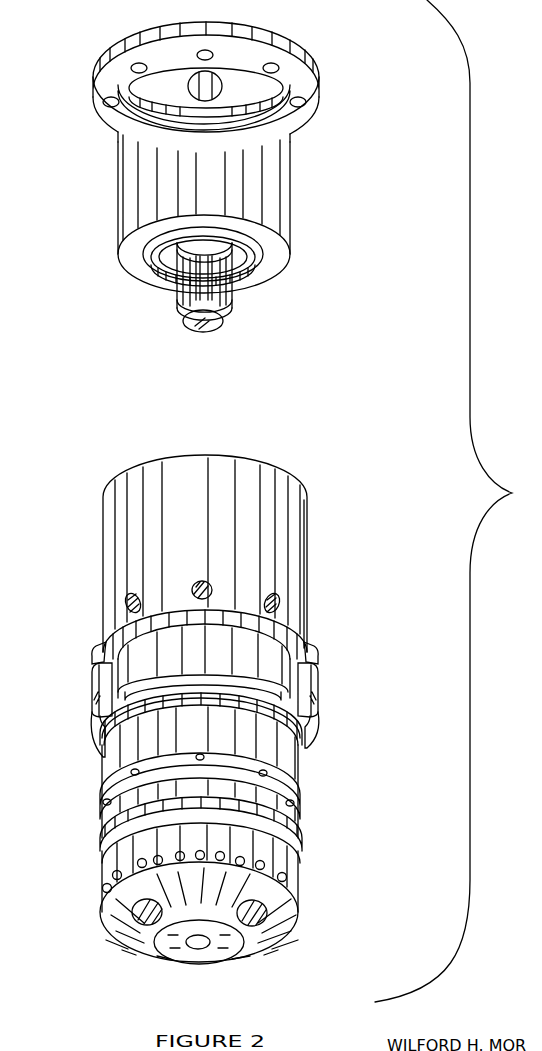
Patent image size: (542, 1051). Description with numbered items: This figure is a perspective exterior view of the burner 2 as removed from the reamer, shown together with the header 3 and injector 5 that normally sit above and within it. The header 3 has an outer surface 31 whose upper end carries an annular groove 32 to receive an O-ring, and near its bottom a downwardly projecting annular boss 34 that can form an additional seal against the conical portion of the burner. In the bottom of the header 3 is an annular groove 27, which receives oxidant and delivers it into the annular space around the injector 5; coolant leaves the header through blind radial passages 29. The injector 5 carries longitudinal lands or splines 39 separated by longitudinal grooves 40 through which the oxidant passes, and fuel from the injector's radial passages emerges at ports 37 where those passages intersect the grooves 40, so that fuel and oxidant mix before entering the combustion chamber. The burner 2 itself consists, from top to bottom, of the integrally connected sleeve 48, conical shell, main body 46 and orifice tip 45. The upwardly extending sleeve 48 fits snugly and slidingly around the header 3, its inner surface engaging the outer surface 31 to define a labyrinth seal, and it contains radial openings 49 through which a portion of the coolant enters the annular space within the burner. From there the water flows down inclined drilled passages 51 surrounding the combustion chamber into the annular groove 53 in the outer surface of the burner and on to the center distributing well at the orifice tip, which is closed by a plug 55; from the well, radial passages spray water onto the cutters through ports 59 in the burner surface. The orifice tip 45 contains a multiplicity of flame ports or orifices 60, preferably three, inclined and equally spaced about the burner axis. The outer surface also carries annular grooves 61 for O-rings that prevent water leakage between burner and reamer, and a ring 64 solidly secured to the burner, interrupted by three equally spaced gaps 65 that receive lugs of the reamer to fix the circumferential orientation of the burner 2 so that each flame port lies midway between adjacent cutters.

The burner 2 is at (330, 575).
The header 3 is at (318, 183).
The injector 5 is at (243, 323).
The annular groove 27 is at (258, 251).
The radial passages 29 is at (210, 87).
The outer surface 31 is at (216, 189).
The annular groove 32 is at (293, 146).
The annular boss 34 is at (278, 265).
The ports 37 is at (190, 318).
The longitudinal lands or splines 39 is at (204, 278).
The longitudinal grooves 40 is at (228, 295).
The orifice tip 45 is at (299, 872).
The main body 46 is at (302, 772).
The sleeve 48 is at (300, 526).
The radial openings 49 is at (134, 594).
The inclined drilled passages 51 is at (198, 755).
The annular groove 53 is at (106, 801).
The plug 55 is at (201, 947).
The ports 59 is at (238, 860).
The flame ports or orifices 60 is at (145, 918).
The annular grooves 61 is at (303, 727).
The ring 64 is at (92, 692).
The gaps 65 is at (102, 662).